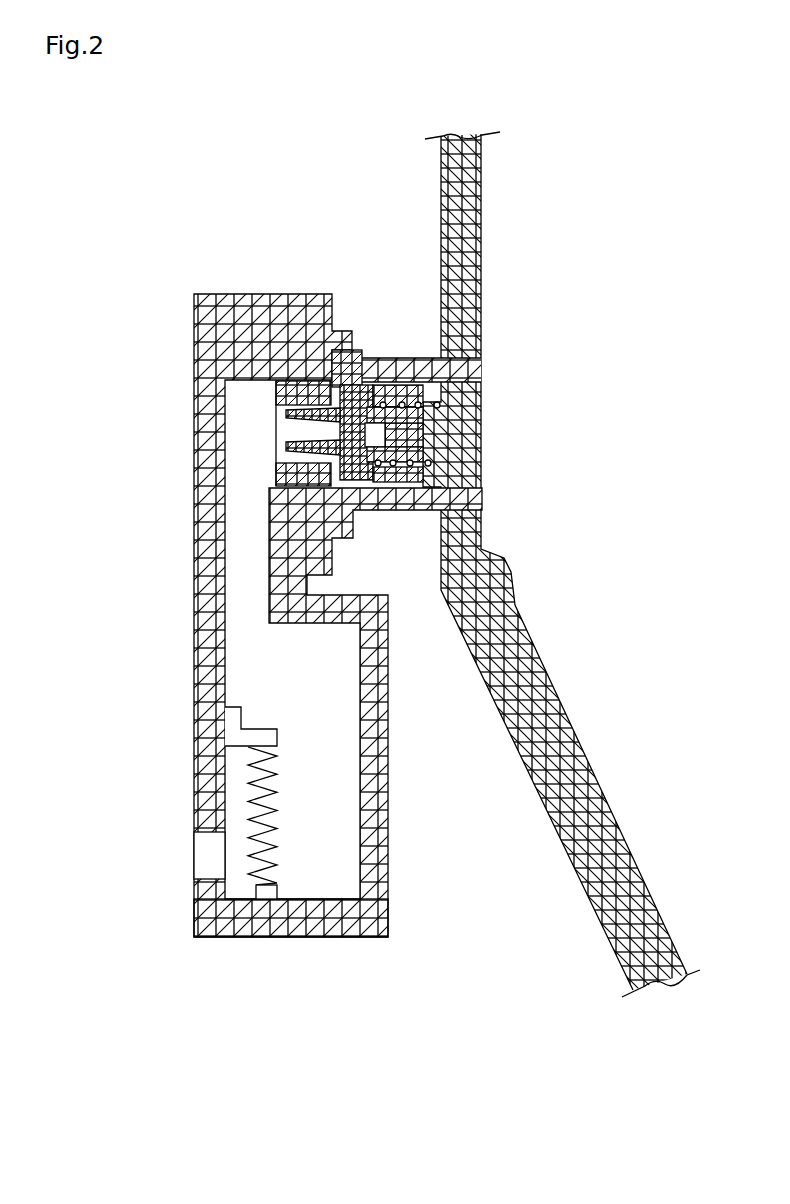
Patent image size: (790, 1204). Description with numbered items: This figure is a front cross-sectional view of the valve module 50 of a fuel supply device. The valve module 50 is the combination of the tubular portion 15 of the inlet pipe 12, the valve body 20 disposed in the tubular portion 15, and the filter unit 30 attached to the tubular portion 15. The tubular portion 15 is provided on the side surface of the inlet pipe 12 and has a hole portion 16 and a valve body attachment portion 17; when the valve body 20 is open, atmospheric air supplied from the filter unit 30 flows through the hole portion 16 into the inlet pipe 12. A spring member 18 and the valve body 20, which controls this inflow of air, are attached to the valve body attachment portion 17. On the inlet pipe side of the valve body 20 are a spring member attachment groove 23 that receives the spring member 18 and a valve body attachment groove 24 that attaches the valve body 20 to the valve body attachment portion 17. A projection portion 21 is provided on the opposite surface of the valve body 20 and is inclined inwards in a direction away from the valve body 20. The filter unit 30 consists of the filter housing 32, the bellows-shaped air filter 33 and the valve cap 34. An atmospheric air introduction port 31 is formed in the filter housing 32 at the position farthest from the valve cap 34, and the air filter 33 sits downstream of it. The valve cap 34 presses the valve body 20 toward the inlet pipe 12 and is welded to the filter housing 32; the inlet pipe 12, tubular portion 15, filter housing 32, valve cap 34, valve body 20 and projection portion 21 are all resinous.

The inlet pipe 12 is at (550, 728).
The tubular portion 15 is at (400, 357).
The hole portion 16 is at (450, 393).
The valve body attachment portion 17 is at (392, 428).
The spring member 18 is at (417, 404).
The valve body 20 is at (369, 381).
The projection portion 21 is at (285, 446).
The spring member attachment groove 23 is at (380, 395).
The valve body attachment groove 24 is at (385, 446).
The filter unit 30 is at (181, 618).
The atmospheric air introduction port 31 is at (210, 857).
The filter housing 32 is at (308, 942).
The air filter 33 is at (248, 800).
The valve cap 34 is at (276, 392).
The valve module 50 is at (230, 216).